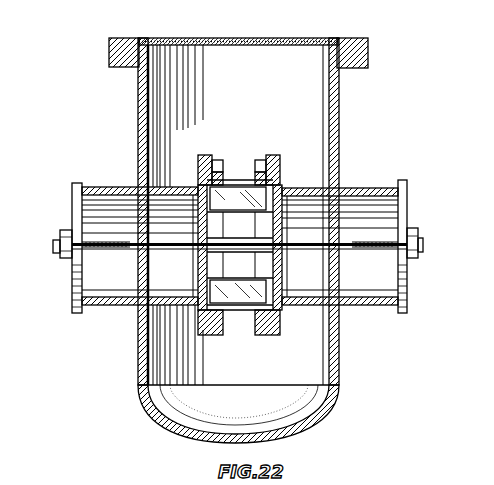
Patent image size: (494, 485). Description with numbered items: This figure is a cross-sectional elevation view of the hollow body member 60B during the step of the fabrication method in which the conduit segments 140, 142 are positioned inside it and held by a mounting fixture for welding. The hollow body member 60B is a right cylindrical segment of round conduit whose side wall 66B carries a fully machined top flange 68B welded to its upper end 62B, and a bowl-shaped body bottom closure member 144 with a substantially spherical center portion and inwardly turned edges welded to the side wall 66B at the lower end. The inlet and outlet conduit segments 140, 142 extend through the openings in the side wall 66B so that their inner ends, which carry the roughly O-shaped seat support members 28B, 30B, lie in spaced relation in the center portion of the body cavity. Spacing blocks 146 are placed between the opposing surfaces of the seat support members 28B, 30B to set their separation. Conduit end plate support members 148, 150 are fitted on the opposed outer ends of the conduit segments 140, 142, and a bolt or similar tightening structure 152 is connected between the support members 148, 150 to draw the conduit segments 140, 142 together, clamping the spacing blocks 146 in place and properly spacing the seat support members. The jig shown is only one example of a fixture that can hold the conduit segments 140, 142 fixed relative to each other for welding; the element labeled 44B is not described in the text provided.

The hollow body member 60B is at (247, 123).
The upper end 62B is at (233, 40).
The side wall 66B is at (338, 95).
The top flange 68B is at (368, 38).
The seat support member 28B is at (197, 168).
The seat support member 30B is at (297, 148).
The spacing blocks 146 is at (290, 243).
The conduit segment 140 is at (135, 278).
The conduit segment 142 is at (348, 285).
The body bottom closure member 144 is at (297, 428).
The conduit end plate support member 148 is at (72, 203).
The conduit end plate support member 150 is at (407, 207).
The rod 44B is at (207, 275).
The tightening structure 152 is at (58, 240).